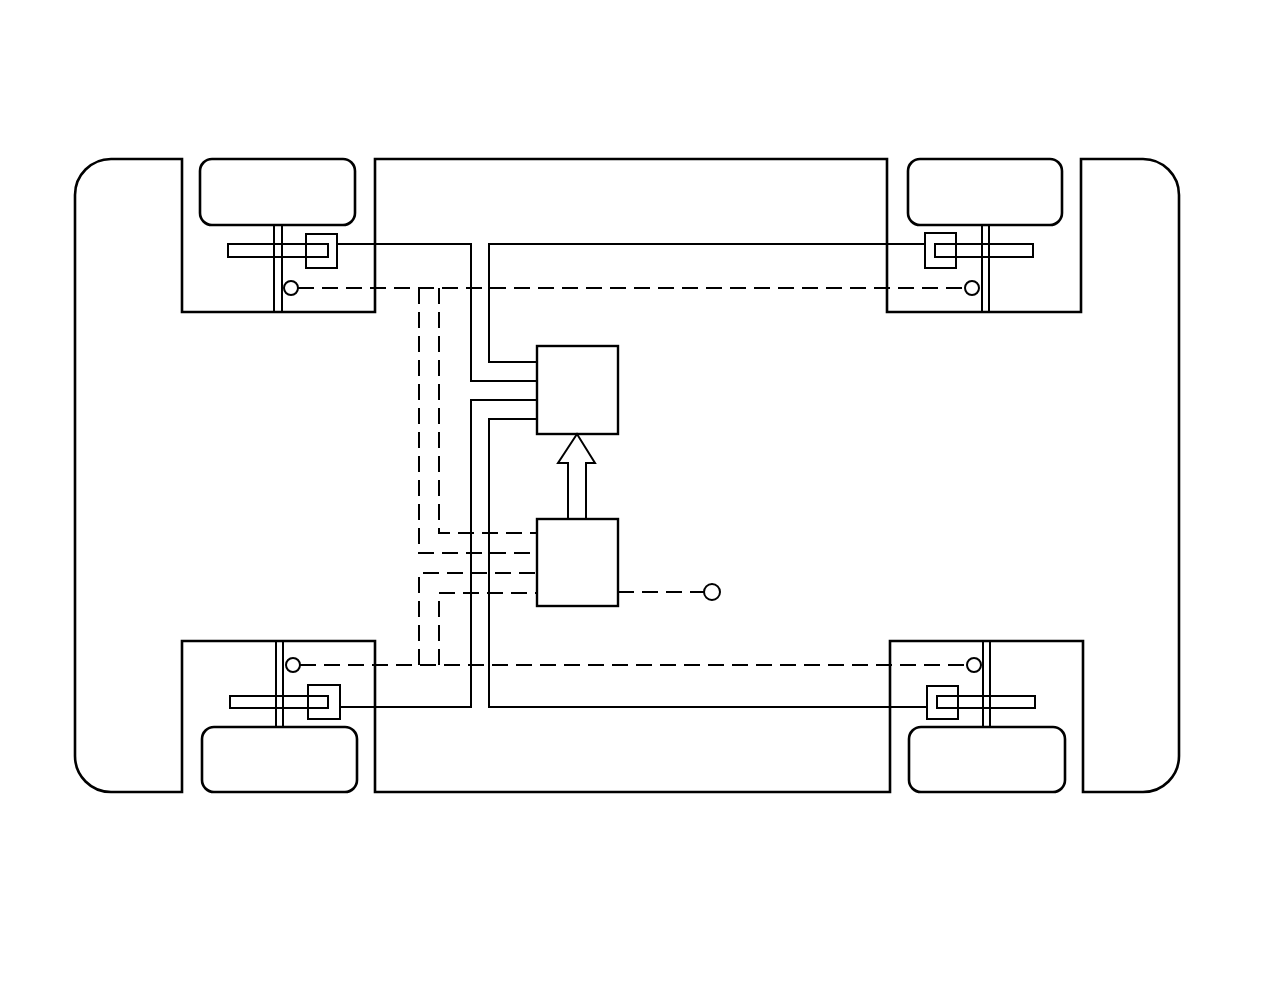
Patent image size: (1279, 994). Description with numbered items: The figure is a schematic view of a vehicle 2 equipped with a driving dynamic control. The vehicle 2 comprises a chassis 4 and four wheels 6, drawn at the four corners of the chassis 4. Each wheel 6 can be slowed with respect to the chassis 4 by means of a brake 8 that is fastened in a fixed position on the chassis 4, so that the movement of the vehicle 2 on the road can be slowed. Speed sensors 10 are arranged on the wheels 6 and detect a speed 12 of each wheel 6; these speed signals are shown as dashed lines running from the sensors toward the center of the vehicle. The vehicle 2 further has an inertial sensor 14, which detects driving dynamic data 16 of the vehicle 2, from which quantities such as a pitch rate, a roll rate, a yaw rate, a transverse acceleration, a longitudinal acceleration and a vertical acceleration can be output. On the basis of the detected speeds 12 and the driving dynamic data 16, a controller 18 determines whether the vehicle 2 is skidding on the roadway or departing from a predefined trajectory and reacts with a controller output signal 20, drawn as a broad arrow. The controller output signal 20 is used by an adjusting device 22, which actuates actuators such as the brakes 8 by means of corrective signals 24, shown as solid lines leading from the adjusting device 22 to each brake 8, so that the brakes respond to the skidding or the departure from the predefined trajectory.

The vehicle 2 is at (1170, 118).
The chassis 4 is at (633, 158).
The wheels 6 is at (275, 158).
The brake 8 is at (253, 258).
The speed sensors 10 is at (293, 298).
The speed 12 is at (388, 289).
The inertial sensor 14 is at (718, 585).
The driving dynamic data 16 is at (672, 593).
The controller 18 is at (618, 563).
The controller output signal 20 is at (586, 484).
The adjusting device 22 is at (618, 389).
The corrective signals 24 is at (420, 244).